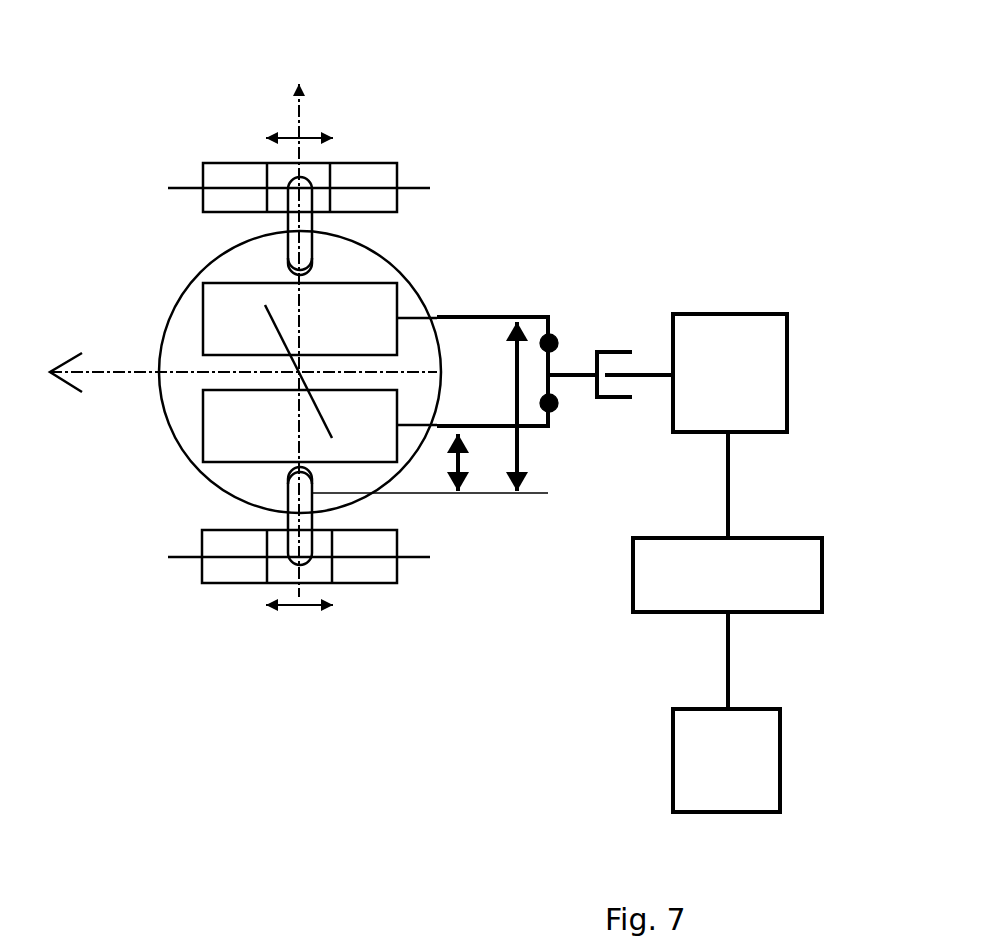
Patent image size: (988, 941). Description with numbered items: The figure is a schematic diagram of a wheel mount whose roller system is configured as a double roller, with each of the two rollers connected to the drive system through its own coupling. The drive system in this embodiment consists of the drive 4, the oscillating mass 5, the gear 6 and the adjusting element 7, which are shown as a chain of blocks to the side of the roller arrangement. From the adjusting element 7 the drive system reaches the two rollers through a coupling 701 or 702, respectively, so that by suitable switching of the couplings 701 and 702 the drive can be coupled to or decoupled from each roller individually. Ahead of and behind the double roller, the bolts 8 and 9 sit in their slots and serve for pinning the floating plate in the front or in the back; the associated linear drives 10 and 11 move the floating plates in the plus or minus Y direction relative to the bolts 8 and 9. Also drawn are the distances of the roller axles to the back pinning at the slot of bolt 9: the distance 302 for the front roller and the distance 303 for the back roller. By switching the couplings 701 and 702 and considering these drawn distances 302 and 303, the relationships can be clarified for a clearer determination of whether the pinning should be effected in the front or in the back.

The drive 4 is at (672, 780).
The oscillating mass 5 is at (657, 614).
The gear 6 is at (718, 312).
The adjusting element 7 is at (607, 351).
The bolt 8 is at (286, 264).
The bolt 9 is at (285, 483).
The linear drive 10 is at (223, 162).
The linear drive 11 is at (224, 584).
The distance d_v 302 is at (518, 392).
The distance d_h 303 is at (453, 462).
The coupling 701 is at (557, 336).
The coupling 702 is at (555, 408).